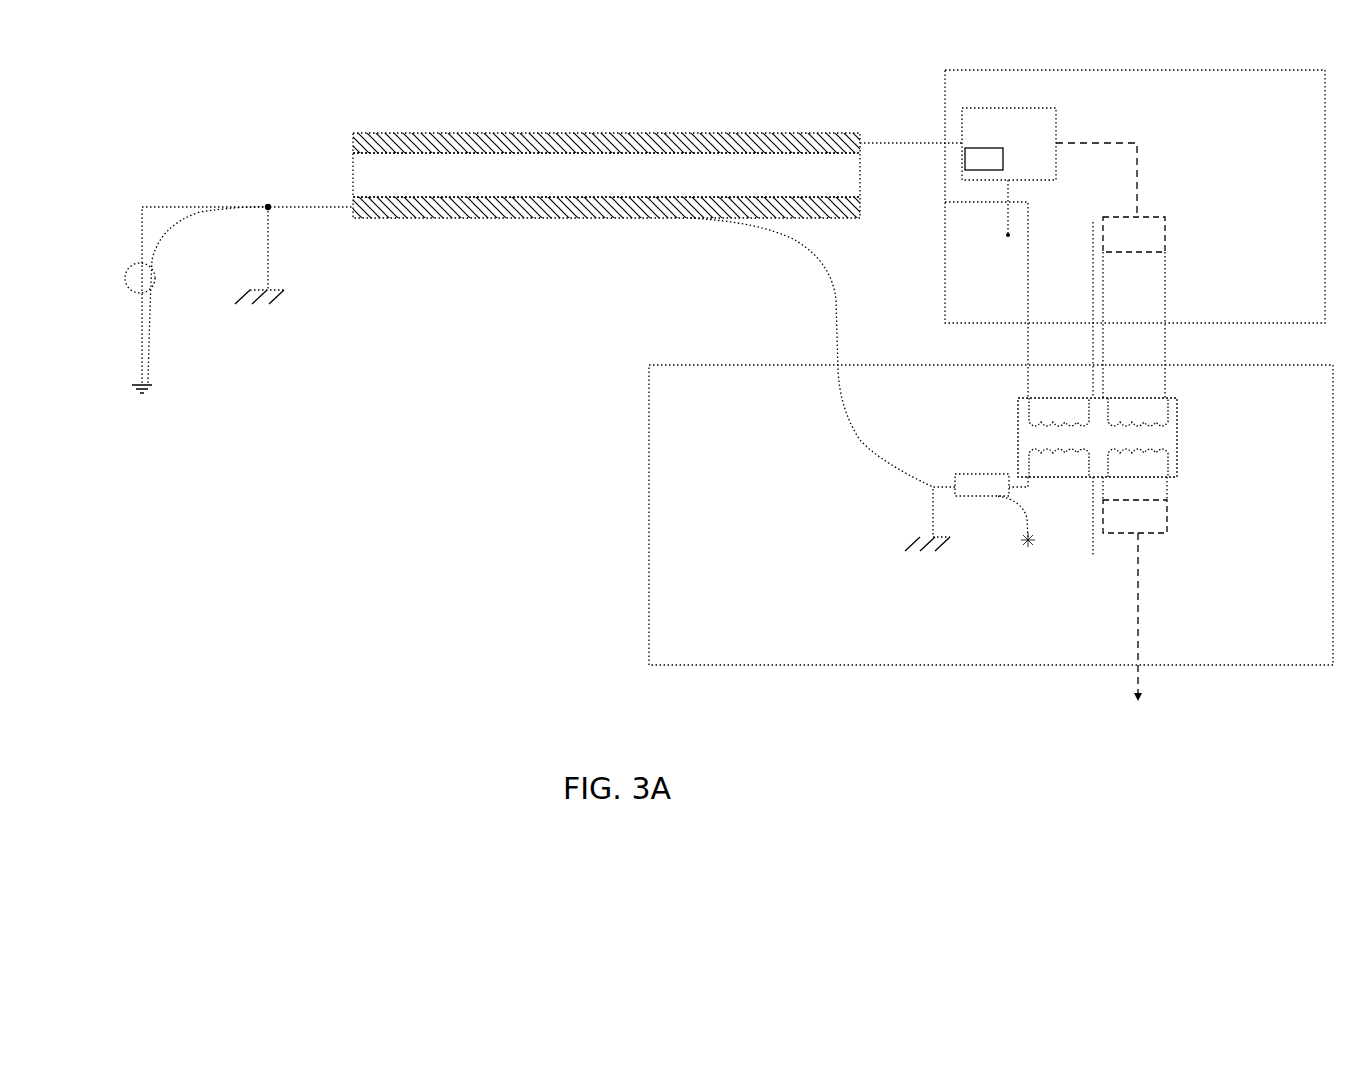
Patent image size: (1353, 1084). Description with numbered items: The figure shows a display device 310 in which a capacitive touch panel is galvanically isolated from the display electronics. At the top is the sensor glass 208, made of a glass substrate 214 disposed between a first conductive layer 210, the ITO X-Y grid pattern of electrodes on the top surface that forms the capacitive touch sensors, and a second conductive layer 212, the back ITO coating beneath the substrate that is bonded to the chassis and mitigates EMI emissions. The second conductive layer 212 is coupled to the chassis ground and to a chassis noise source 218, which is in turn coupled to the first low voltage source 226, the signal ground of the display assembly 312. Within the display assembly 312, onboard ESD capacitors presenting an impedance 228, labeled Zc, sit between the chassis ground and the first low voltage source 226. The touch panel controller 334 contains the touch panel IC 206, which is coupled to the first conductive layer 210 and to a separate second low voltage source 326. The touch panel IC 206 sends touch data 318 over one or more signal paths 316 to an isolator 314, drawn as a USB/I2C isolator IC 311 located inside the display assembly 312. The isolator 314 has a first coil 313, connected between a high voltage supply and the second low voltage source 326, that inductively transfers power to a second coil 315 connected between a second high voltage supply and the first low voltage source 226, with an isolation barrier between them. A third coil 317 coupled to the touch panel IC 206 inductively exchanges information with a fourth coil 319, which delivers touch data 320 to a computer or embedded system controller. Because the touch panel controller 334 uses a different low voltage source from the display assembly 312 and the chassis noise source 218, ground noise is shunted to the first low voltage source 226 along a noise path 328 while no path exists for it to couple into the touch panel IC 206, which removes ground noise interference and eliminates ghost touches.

The display device 310 is at (272, 740).
The sensor glass 208 is at (699, 114).
The first conductive layer 210 is at (353, 142).
The glass substrate 214 is at (861, 178).
The second conductive layer 212 is at (829, 220).
The chassis noise source 218 is at (157, 283).
The touch panel controller 334 is at (1092, 234).
The touch panel integrated circuit 206 is at (1056, 125).
The signal paths 316 is at (1137, 166).
The second low voltage source 326 is at (1000, 234).
The touch data 318 is at (1165, 243).
The display assembly 312 is at (991, 540).
The USB/I2C isolator IC 311 is at (1192, 386).
The first coil 313 is at (1018, 405).
The second coil 315 is at (1018, 457).
The third coil 317 is at (1177, 406).
The isolator 314 is at (1177, 441).
The fourth coil 319 is at (1177, 469).
The touch data 320 is at (1167, 522).
The impedance 228 is at (958, 474).
The first low voltage source 226 is at (1020, 547).
The noise path 328 is at (836, 303).